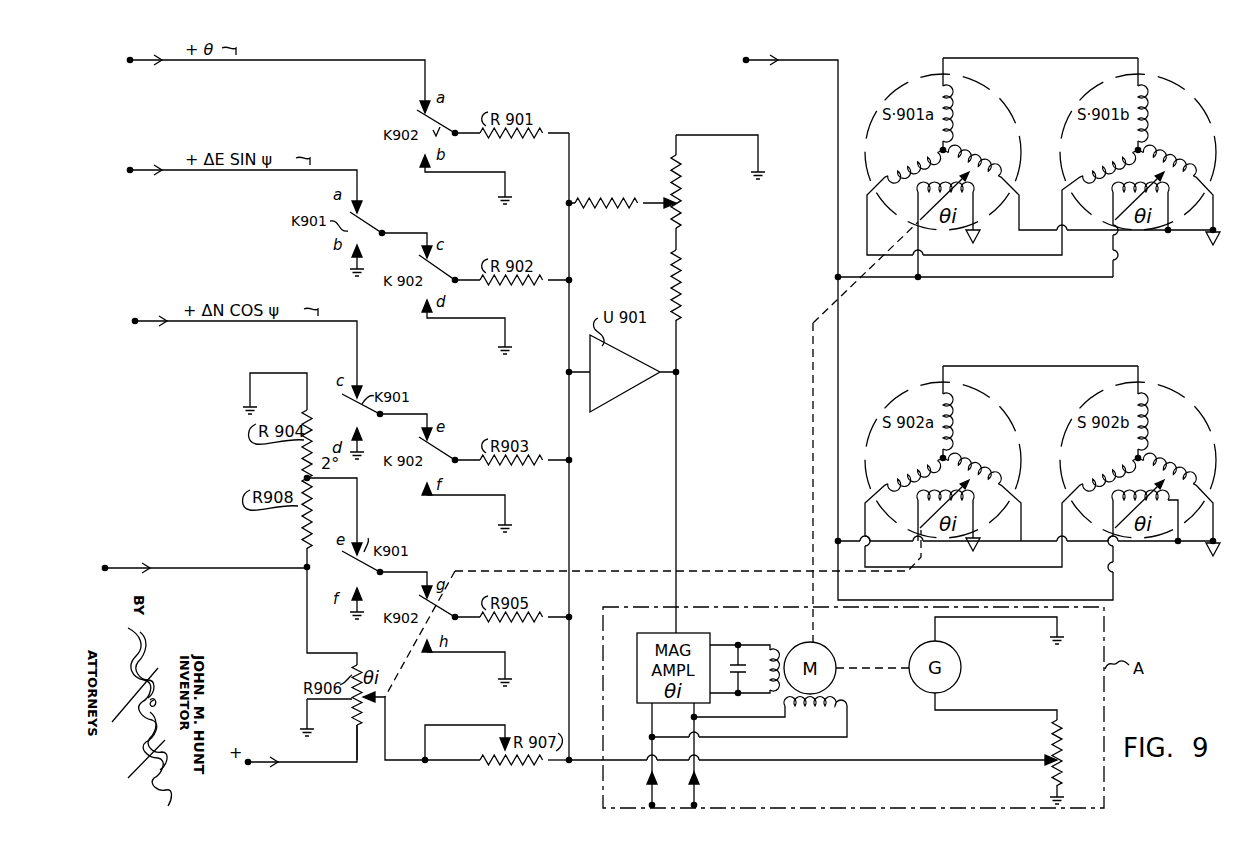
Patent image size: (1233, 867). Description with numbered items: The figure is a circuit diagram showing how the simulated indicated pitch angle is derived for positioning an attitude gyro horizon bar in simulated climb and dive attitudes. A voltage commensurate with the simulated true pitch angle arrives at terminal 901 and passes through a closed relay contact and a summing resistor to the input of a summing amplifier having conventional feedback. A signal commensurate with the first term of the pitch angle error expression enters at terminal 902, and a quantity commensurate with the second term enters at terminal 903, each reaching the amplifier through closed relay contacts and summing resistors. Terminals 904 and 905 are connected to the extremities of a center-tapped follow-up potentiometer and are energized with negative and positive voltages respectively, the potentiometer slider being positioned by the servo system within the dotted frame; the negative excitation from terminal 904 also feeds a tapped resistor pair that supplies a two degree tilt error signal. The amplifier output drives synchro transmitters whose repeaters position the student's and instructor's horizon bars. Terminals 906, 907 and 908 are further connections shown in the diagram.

The terminal 901 is at (132, 58).
The terminal 902 is at (132, 168).
The terminal 903 is at (137, 319).
The terminal 904 is at (107, 566).
The terminal 905 is at (252, 760).
The power supply terminal 906 is at (647, 802).
The power supply terminal 907 is at (702, 802).
The reference voltage terminal 908 is at (744, 58).